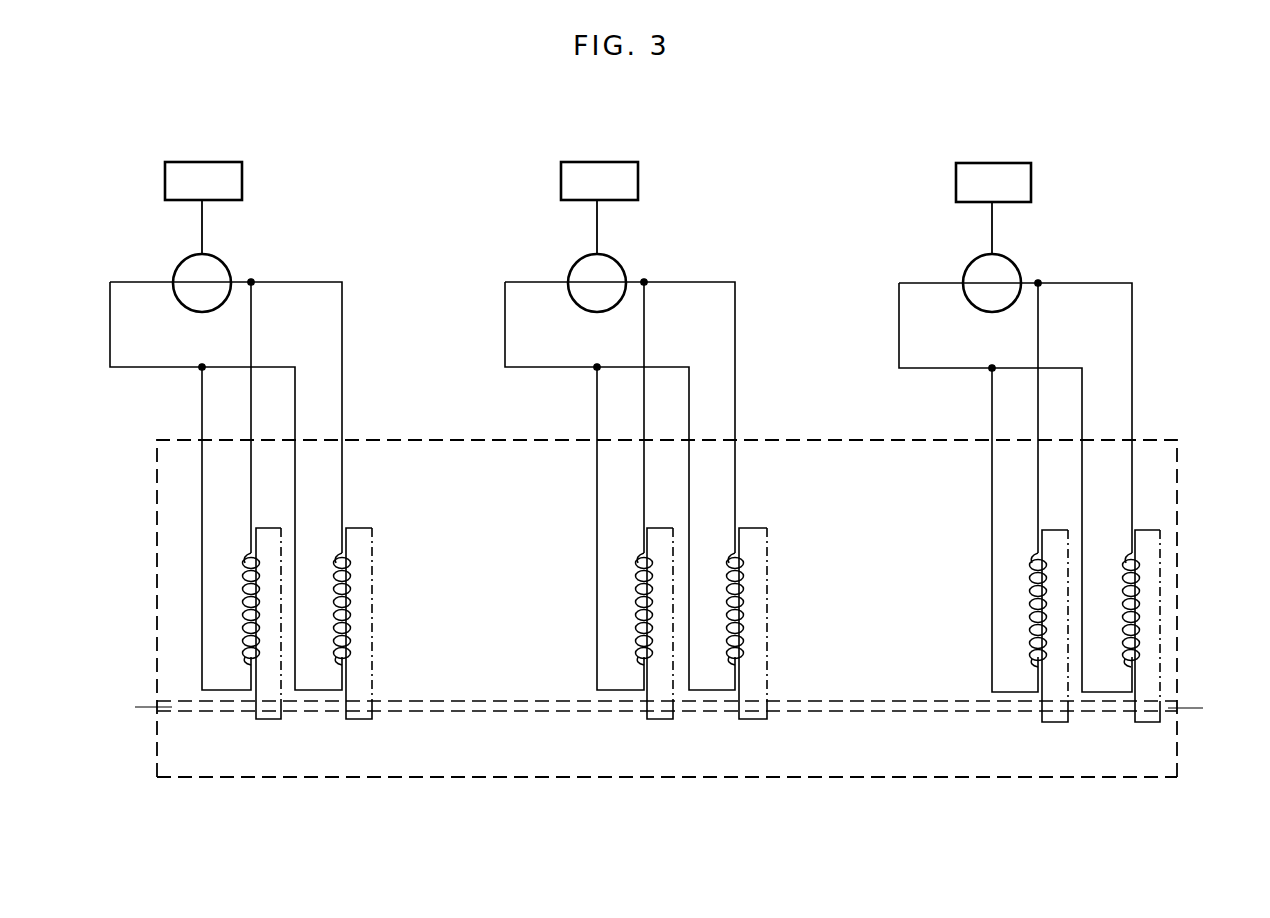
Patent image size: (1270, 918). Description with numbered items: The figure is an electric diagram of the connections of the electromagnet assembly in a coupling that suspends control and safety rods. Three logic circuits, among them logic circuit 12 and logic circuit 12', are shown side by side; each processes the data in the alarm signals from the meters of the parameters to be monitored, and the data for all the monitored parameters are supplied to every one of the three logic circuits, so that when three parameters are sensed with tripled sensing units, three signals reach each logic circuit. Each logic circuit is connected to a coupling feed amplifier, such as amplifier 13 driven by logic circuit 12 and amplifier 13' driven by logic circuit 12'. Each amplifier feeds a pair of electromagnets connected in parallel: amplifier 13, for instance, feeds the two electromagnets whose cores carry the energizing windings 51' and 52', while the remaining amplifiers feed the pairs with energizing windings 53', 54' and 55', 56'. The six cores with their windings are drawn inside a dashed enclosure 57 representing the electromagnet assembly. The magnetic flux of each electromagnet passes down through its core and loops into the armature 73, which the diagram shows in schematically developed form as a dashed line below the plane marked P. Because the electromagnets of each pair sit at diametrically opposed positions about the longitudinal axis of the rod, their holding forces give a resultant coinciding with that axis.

The logic circuit 12 is at (363, 181).
The logic circuit 12' is at (599, 181).
The amplifier 13 is at (375, 256).
The amplifier 13' is at (597, 256).
The energizing winding 51' is at (233, 589).
The energizing winding 52' is at (326, 604).
The energizing winding 53' is at (627, 598).
The energizing winding 54' is at (718, 604).
The energizing winding 55' is at (1021, 608).
The energizing winding 56' is at (1111, 610).
The magnetic head assembly enclosure 57 is at (1176, 530).
The armature 73 is at (883, 777).